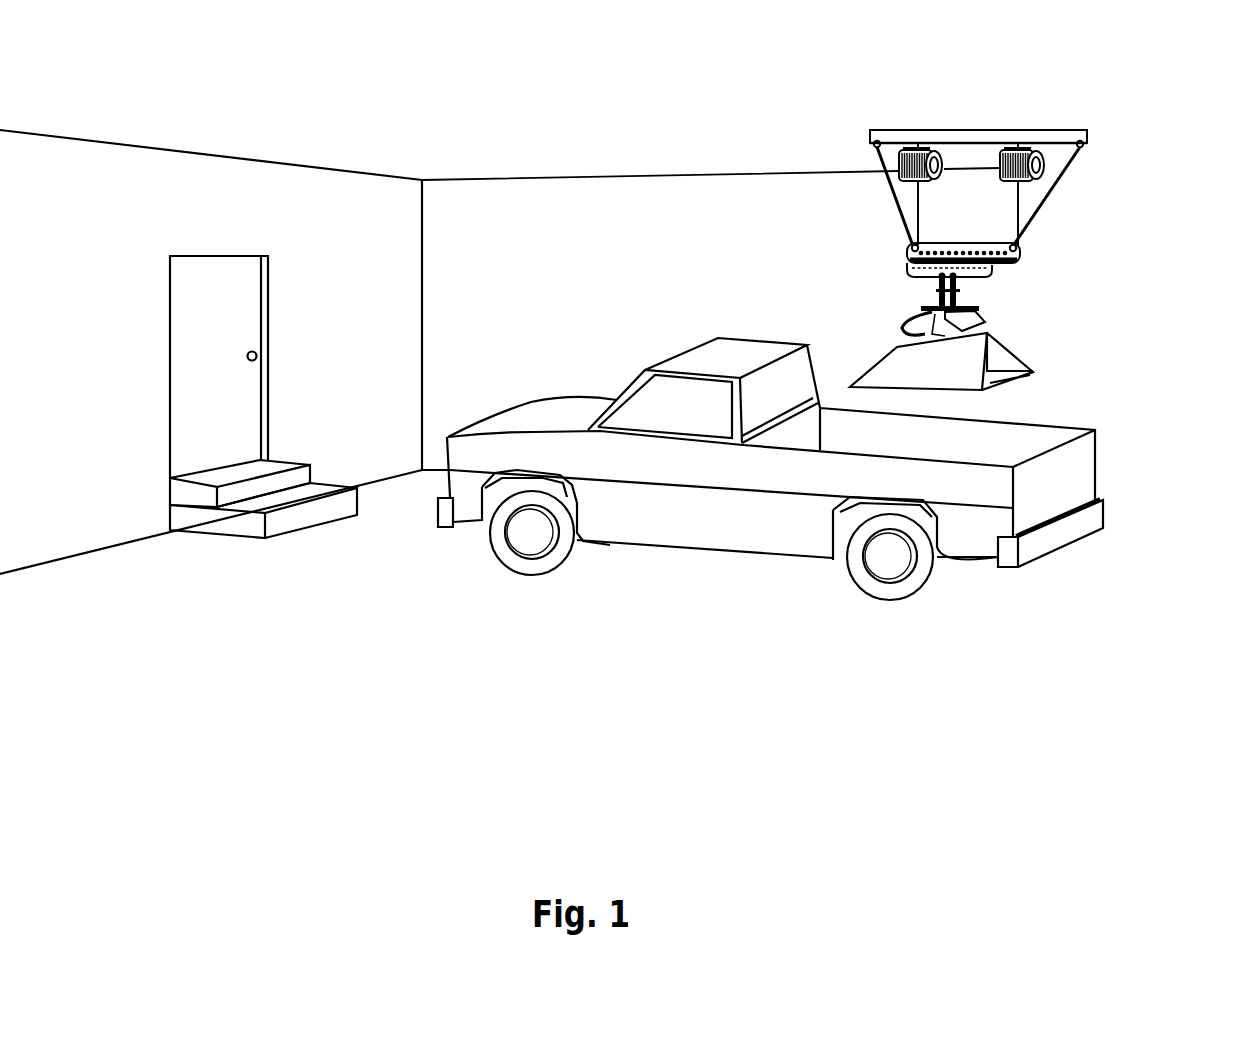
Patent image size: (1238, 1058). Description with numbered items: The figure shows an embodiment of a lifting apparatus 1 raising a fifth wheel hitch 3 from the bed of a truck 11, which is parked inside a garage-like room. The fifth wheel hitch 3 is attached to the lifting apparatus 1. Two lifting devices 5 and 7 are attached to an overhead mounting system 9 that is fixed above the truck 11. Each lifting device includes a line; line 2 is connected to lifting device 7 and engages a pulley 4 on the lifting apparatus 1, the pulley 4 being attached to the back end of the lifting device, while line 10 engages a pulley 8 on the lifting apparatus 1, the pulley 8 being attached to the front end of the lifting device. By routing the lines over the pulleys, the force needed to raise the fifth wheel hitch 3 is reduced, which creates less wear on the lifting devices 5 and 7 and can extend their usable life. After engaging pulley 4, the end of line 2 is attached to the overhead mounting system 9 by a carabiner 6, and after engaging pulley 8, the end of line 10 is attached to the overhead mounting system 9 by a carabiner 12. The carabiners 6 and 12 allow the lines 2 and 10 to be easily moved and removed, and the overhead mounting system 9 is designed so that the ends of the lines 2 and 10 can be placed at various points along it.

The lifting apparatus 1 is at (979, 175).
The line 2 is at (1057, 207).
The fifth wheel hitch 3 is at (927, 367).
The pulley 4 is at (1023, 243).
The lifting device 5 is at (923, 150).
The carabiner 6 is at (1088, 142).
The lifting device 7 is at (1023, 147).
The pulley 8 is at (907, 263).
The overhead mounting system 9 is at (987, 130).
The line 10 is at (895, 202).
The truck 11 is at (533, 413).
The carabiner 12 is at (877, 143).